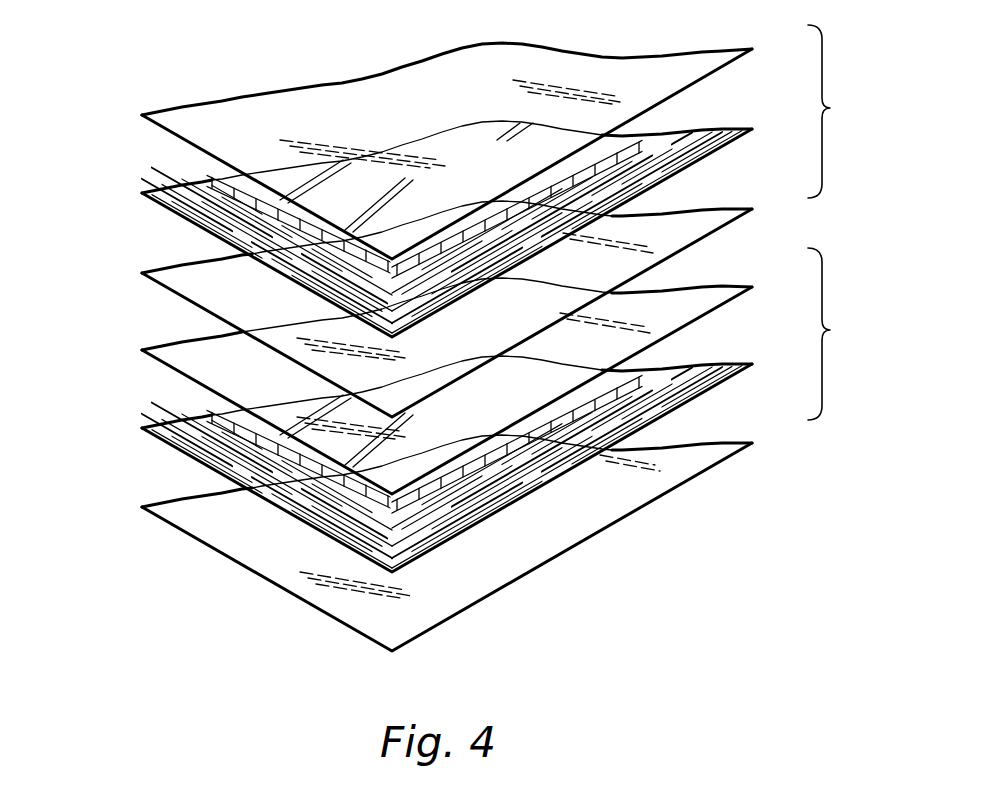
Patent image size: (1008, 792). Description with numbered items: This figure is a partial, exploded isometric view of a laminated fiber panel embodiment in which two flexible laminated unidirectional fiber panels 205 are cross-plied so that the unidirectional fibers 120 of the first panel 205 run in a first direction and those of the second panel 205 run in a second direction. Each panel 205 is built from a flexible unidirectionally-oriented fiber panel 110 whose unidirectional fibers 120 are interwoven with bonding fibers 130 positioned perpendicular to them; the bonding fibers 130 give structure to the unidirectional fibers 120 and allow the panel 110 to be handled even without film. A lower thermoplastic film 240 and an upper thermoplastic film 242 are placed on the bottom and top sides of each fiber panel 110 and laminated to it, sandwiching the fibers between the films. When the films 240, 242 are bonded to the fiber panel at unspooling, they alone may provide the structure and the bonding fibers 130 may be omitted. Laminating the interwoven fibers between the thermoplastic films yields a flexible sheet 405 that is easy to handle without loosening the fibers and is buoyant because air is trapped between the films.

The flexible sheet 405 is at (489, 331).
The laminated unidirectional fiber panel 205 is at (830, 108).
The upper thermoplastic film 242 is at (163, 110).
The unidirectional fibers 120 is at (163, 188).
The lower thermoplastic film 240 is at (163, 268).
The unidirectionally-oriented fiber panel 110 is at (707, 127).
The bonding fibers 130 is at (625, 138).